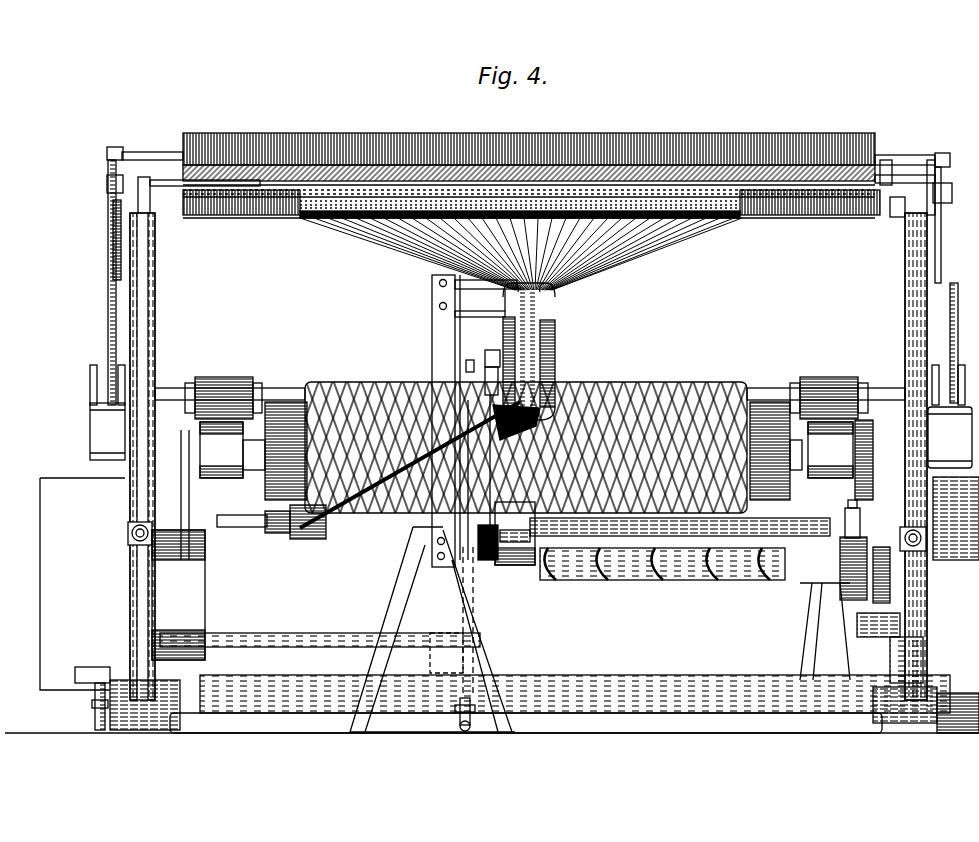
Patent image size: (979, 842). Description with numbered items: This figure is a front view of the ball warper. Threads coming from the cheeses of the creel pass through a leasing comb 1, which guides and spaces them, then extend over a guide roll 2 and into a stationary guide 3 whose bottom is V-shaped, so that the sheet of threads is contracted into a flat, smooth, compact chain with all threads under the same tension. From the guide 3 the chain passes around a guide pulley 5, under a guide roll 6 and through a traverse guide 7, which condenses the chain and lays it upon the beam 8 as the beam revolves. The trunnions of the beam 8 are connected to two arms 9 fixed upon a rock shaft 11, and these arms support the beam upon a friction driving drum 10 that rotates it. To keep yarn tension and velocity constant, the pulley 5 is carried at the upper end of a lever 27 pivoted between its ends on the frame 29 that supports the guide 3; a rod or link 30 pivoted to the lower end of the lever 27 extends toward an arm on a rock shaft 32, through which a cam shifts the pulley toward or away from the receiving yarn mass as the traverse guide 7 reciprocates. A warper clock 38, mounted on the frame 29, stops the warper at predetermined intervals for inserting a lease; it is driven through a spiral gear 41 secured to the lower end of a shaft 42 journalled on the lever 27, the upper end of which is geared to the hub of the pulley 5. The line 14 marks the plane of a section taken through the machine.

The leasing comb 1 is at (633, 143).
The guide roll 2 is at (857, 178).
The stationary guide 3 is at (552, 293).
The guide pulley 5 is at (552, 347).
The guide roll 6 is at (793, 519).
The traverse guide 7 is at (300, 513).
The beam 8 is at (773, 413).
The arms 9 is at (227, 383).
The friction driving drum 10 is at (872, 510).
The rock shaft 11 is at (172, 393).
The section line 14 is at (332, 755).
The lever 27 is at (480, 595).
The frame 29 is at (495, 657).
The rod or link 30 is at (460, 715).
The rock shaft 32 is at (303, 637).
The warper clock 38 is at (520, 547).
The spiral gear 41 is at (508, 532).
The shaft 42 is at (483, 405).